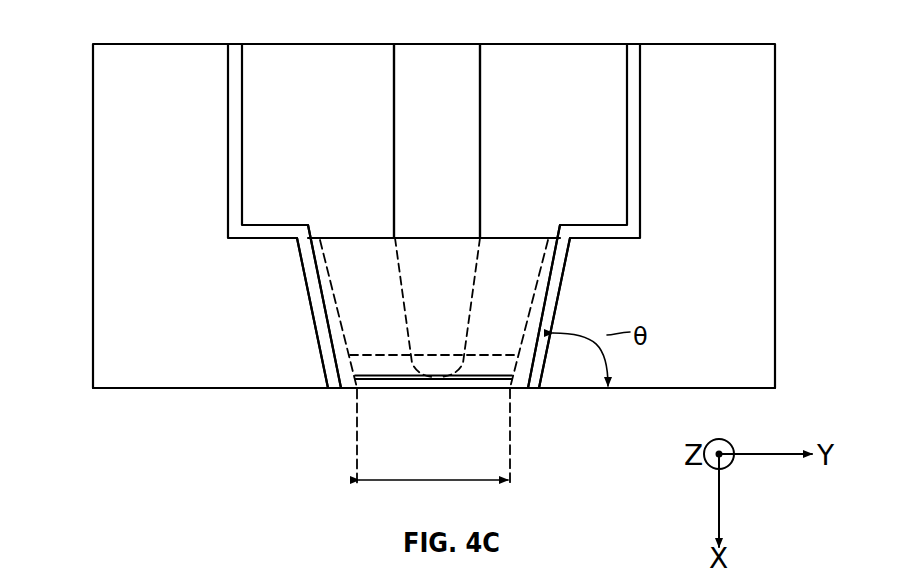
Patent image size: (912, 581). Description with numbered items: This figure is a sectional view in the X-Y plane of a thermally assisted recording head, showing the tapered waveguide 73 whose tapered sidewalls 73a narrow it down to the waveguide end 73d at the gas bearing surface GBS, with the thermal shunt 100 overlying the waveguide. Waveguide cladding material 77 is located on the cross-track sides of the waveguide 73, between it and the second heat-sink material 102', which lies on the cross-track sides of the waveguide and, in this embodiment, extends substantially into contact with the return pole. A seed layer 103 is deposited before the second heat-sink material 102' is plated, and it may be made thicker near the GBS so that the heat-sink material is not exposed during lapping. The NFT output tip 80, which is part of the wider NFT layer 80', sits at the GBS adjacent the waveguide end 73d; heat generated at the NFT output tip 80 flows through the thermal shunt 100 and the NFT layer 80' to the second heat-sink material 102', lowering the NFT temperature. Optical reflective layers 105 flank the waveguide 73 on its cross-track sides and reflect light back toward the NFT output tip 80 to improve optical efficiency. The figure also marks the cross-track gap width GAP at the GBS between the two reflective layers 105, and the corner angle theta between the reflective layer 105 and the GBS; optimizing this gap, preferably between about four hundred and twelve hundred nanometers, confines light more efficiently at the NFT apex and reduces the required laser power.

The waveguide cladding material 77 is at (337, 68).
The waveguide 73 is at (440, 67).
The tapered sidewall of column 73a is at (478, 260).
The waveguide end 73d is at (417, 378).
The NFT output tip 80 is at (433, 415).
The NFT layer 80' is at (412, 306).
The thermal shunt 100 is at (354, 238).
The second heat-sink material 102' is at (431, 216).
The seed layer 103 is at (233, 93).
The optical reflective layer 105 is at (343, 362).
The gas bearing surface GBS is at (117, 390).
The gap width GAP is at (452, 485).